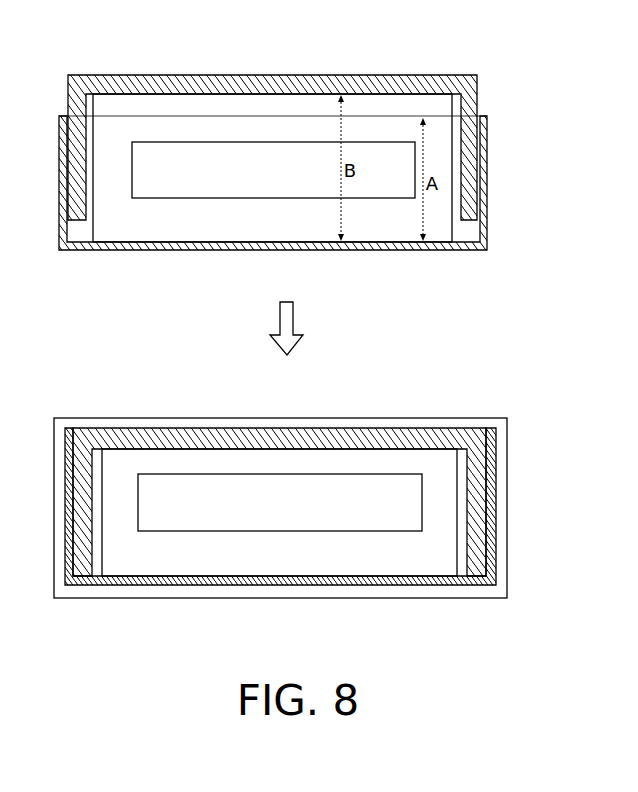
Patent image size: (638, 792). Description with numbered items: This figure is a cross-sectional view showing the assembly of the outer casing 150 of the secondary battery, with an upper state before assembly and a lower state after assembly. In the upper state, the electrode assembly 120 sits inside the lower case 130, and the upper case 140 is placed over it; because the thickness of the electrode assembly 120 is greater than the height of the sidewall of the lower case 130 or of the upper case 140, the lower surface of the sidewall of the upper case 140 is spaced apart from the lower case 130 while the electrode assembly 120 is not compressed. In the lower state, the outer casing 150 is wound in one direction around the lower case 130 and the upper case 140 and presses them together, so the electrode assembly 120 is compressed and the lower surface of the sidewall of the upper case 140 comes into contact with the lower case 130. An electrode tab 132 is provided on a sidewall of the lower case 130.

The electrode assembly 120 is at (268, 103).
The lower case 130 is at (487, 190).
The electrode tab 132 is at (367, 503).
The upper case 140 is at (377, 74).
The outer casing 150 is at (507, 448).